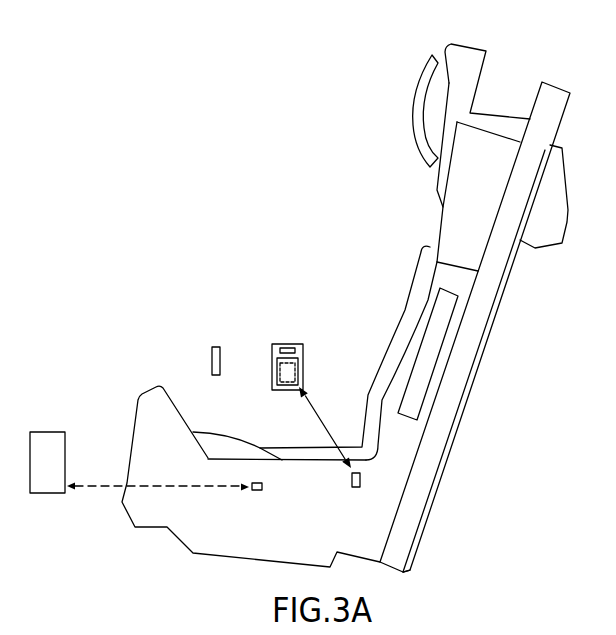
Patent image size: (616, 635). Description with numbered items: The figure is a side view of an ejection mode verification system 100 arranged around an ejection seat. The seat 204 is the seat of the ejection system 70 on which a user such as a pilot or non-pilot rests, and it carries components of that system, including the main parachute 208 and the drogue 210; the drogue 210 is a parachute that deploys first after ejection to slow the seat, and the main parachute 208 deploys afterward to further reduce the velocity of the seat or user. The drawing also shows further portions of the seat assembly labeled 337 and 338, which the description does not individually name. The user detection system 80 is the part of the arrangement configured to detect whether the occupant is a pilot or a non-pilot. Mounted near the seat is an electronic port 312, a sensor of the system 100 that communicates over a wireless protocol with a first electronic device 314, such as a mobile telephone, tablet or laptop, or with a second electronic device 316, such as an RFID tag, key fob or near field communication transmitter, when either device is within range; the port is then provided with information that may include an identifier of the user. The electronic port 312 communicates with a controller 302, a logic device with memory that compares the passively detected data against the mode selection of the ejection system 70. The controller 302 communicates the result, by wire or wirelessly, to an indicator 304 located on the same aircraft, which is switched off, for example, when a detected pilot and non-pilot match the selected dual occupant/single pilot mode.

The ejection mode verification system 100 is at (320, 216).
The user detection system 80 is at (178, 264).
The ejection system 70 is at (175, 373).
The seat 204 is at (386, 312).
The main parachute 208 is at (478, 271).
The drogue 210 is at (560, 230).
The trim panel 337 is at (510, 285).
The trim panel portion 338 is at (603, 407).
The controller 302 is at (257, 492).
The indicator 304 is at (47, 495).
The electronic port 312 is at (357, 488).
The first electronic device 314 is at (272, 347).
The second electronic device 316 is at (211, 358).